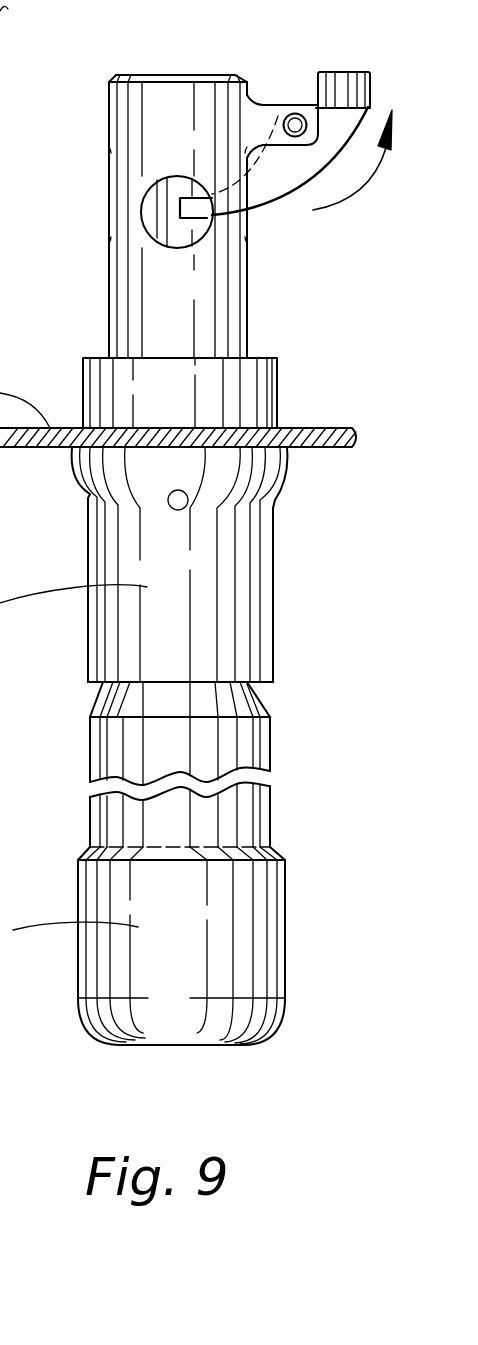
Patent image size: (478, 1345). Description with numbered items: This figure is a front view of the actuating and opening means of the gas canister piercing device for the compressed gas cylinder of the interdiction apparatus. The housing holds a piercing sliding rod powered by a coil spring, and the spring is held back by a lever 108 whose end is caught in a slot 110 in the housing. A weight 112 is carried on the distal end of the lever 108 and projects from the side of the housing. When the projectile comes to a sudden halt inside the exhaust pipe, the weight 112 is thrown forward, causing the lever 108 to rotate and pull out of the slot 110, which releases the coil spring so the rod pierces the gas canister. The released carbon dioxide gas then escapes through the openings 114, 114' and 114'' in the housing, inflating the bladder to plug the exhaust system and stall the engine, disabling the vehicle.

The lever 108 is at (275, 177).
The slot 110 is at (190, 200).
The weight 112 is at (340, 80).
The opening 114 is at (70, 565).
The opening 114' is at (283, 565).
The opening 114'' is at (169, 522).